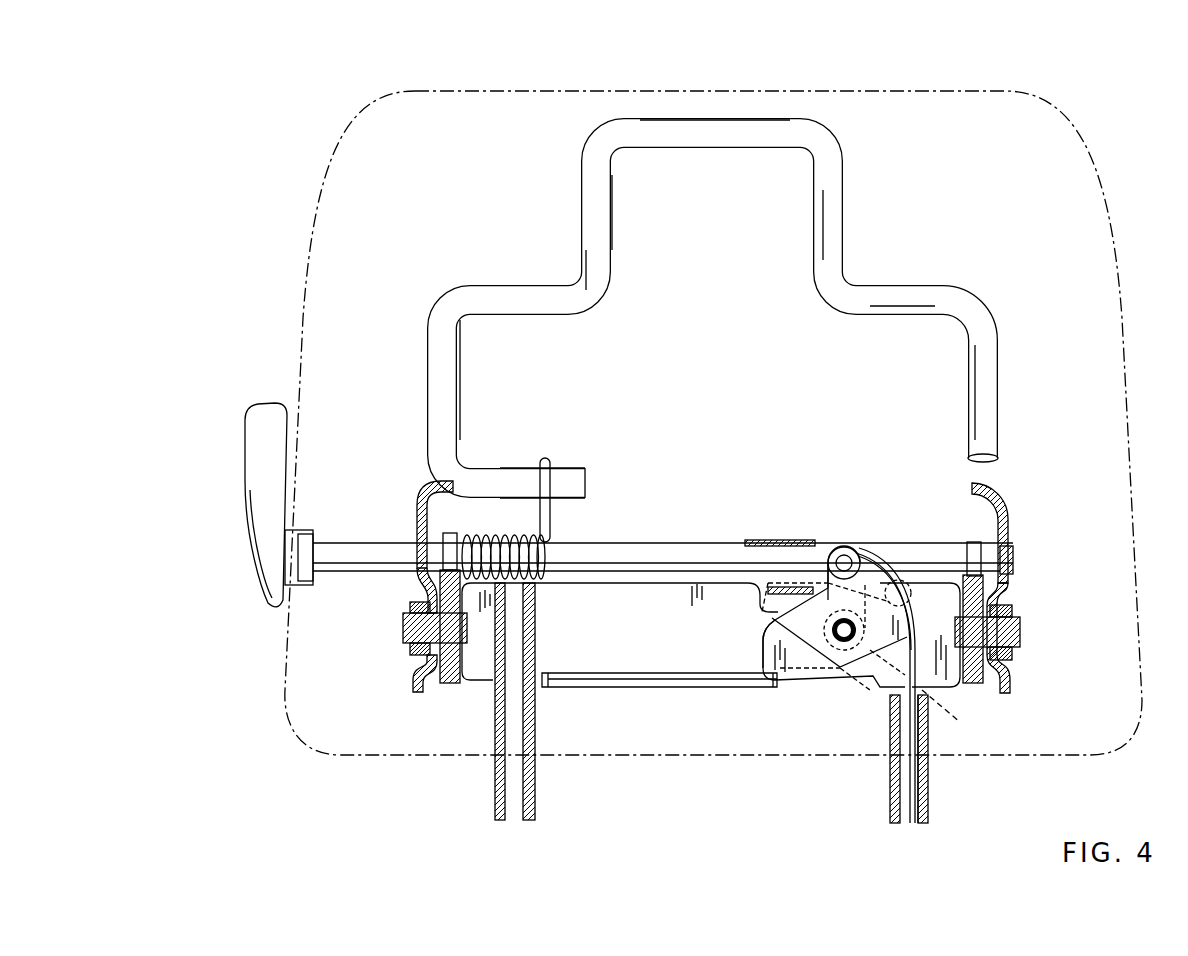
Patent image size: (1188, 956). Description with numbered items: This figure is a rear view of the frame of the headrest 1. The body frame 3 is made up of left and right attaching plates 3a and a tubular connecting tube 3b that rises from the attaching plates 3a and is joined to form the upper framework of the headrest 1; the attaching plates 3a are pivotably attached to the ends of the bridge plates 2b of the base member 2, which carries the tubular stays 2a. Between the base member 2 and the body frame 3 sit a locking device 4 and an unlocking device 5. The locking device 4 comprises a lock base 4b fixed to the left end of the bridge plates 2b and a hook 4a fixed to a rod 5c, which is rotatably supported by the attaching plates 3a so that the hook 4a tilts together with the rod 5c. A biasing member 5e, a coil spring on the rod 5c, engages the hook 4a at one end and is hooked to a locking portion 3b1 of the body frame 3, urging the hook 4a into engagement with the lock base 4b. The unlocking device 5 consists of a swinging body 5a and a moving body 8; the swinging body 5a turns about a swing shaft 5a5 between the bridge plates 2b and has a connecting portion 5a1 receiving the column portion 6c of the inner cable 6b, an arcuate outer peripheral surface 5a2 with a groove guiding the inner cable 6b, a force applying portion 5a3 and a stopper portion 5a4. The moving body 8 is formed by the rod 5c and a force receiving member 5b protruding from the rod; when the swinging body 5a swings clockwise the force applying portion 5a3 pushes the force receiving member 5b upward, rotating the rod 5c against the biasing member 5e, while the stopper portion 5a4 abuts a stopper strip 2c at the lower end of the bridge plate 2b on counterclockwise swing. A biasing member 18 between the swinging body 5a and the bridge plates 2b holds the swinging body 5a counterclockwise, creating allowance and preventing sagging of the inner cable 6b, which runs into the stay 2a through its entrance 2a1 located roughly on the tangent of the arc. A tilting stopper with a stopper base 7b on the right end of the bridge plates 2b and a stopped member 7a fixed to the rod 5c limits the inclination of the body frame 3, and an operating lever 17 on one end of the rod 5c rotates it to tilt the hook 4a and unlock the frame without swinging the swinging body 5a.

The headrest 1 is at (322, 128).
The base member 2 is at (724, 713).
The stay 2a is at (497, 790).
The entrance of the stay 2a1 is at (920, 728).
The bridge plates 2b is at (652, 690).
The stopper strip 2c is at (677, 690).
The body frame 3 is at (680, 309).
The attaching plates 3a is at (420, 500).
The connecting tube 3b is at (835, 178).
The locking portion 3b1 is at (508, 482).
The locking device 4 is at (400, 583).
The hook 4a is at (443, 540).
The lock base 4b is at (447, 672).
The unlocking device 5 is at (711, 654).
The swinging body 5a is at (831, 646).
The connecting portion 5a1 is at (870, 568).
The outer peripheral surface 5a2 is at (893, 560).
The force applying portion 5a3 is at (790, 598).
The stopper portion 5a4 is at (800, 662).
The swing shaft 5a5 is at (843, 645).
The force receiving member 5b is at (757, 612).
The rod 5c is at (598, 563).
The biasing member 5e is at (548, 527).
The inner cable 6b is at (925, 805).
The column portion 6c is at (845, 546).
The stopped member 7a is at (975, 562).
The stopper base 7b is at (975, 683).
The moving body 8 is at (678, 613).
The operating lever 17 is at (262, 445).
The biasing member 18 is at (957, 720).